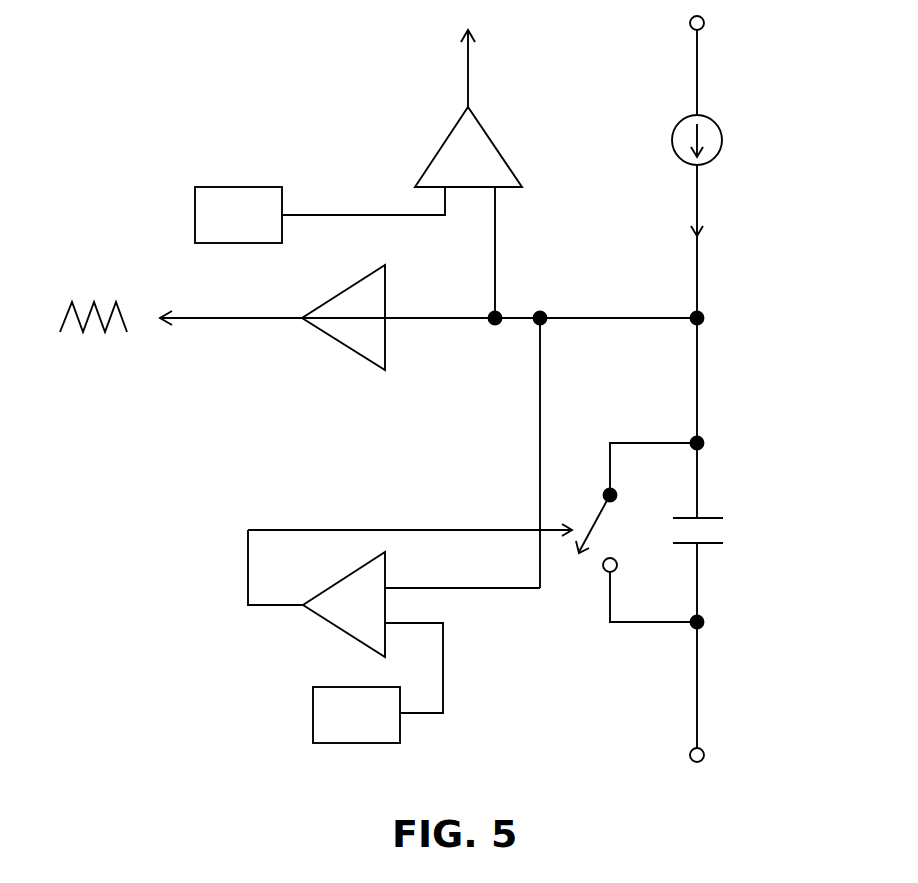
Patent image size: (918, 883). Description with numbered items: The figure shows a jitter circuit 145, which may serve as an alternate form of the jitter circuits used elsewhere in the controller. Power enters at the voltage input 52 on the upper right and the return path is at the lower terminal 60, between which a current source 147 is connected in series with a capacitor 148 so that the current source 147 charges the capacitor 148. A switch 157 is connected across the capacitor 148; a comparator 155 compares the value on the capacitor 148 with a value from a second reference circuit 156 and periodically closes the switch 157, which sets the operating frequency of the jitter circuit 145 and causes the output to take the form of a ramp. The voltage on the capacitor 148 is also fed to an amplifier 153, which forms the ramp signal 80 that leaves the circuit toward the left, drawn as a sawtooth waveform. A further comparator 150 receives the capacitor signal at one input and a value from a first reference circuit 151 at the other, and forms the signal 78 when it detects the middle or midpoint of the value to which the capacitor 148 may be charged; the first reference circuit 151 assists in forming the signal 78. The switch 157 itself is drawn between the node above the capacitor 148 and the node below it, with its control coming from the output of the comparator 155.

The voltage input 52 is at (705, 23).
The output terminal 60 is at (705, 752).
The signal 78 is at (469, 66).
The signal 80 is at (186, 320).
The jitter circuit 145 is at (574, 764).
The current source 147 is at (718, 125).
The capacitor 148 is at (730, 527).
The comparator 150 is at (510, 160).
The first reference voltage source 151 is at (272, 187).
The amplifier 153 is at (356, 355).
The comparator 155 is at (320, 620).
The second reference voltage source 156 is at (312, 718).
The switch 157 is at (598, 514).